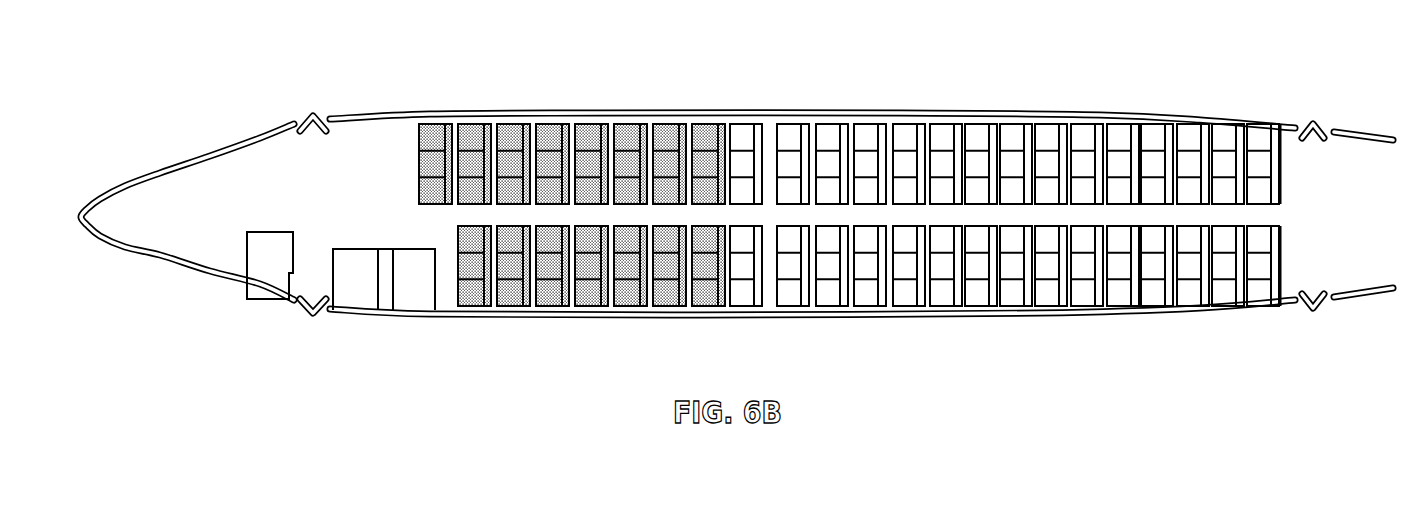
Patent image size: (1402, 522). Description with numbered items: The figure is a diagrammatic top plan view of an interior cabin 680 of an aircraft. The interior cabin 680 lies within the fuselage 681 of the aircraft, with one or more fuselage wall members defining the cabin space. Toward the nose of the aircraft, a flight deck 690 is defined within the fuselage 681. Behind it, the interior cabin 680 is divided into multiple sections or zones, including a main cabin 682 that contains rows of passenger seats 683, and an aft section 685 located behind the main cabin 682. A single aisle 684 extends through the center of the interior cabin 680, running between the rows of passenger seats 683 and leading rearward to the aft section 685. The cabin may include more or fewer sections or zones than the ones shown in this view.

The interior cabin 680 is at (330, 54).
The fuselage 681 is at (537, 117).
The main cabin 682 is at (475, 138).
The passenger seats 683 is at (747, 145).
The single aisle 684 is at (868, 212).
The aft section 685 is at (1300, 148).
The flight deck 690 is at (153, 212).